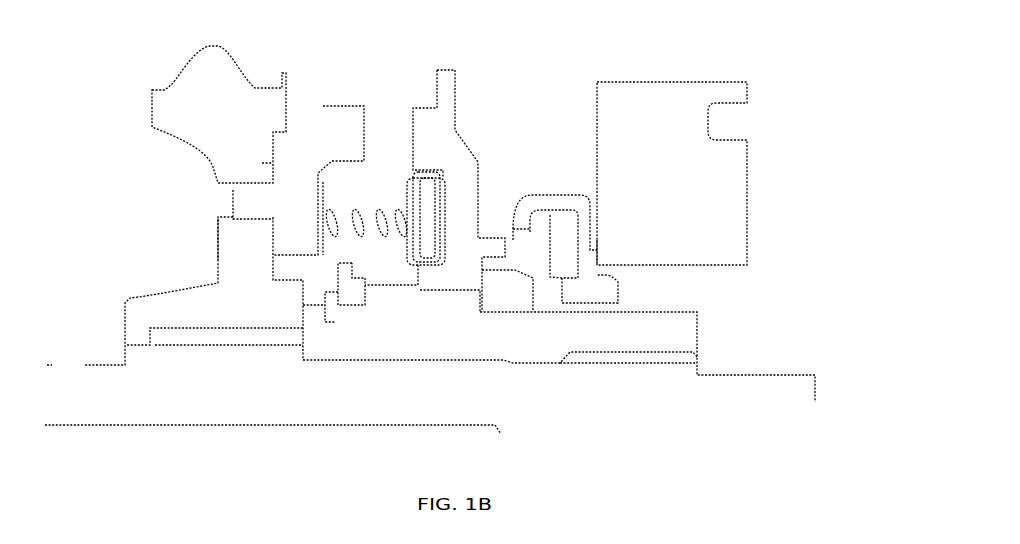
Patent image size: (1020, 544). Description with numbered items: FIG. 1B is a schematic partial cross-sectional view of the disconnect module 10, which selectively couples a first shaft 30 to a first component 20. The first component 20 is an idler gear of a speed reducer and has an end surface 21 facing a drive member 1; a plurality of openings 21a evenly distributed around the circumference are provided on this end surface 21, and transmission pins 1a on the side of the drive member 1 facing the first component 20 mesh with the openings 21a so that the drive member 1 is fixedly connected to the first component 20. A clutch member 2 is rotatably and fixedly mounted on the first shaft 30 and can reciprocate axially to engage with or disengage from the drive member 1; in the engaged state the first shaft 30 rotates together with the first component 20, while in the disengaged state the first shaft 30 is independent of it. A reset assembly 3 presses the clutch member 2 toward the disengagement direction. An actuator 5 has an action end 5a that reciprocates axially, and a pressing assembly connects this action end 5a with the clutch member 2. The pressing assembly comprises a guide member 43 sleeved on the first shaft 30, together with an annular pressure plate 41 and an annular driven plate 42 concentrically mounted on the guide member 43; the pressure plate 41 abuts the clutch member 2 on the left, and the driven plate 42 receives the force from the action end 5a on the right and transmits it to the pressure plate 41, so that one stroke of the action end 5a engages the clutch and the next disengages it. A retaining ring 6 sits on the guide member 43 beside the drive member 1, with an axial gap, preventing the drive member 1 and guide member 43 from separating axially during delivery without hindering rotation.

The disconnect module 10 is at (553, 56).
The first component 20 is at (190, 114).
The end surface 21 is at (273, 163).
The openings 21a is at (229, 209).
The drive member 1 is at (337, 148).
The transmission pins 1a is at (270, 208).
The clutch member 2 is at (437, 143).
The reset assembly 3 is at (373, 181).
The actuator 5 is at (633, 125).
The action end 5a is at (591, 232).
The pressure plate 41 is at (513, 228).
The driven plate 42 is at (597, 282).
The guide member 43 is at (593, 343).
The first shaft 30 is at (247, 405).
The retaining ring 6 is at (333, 307).